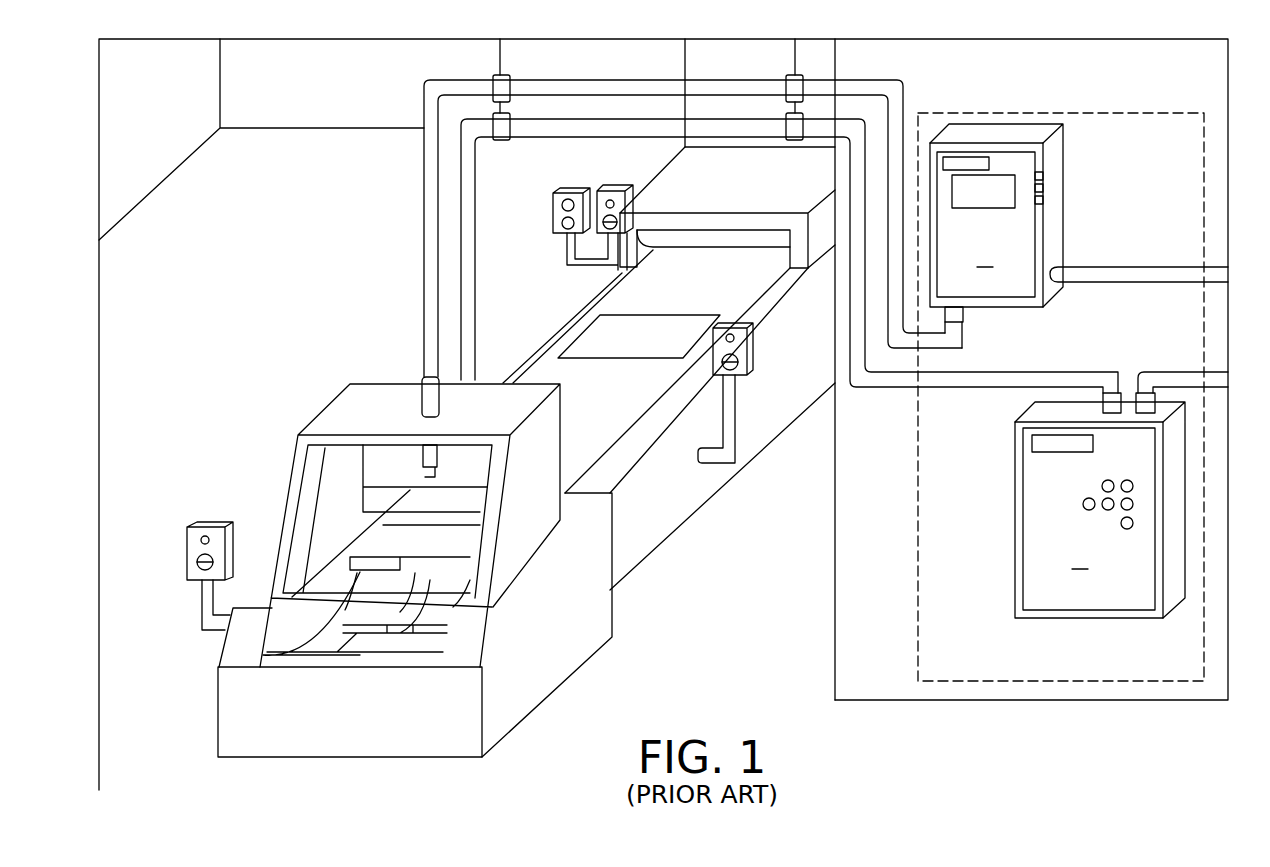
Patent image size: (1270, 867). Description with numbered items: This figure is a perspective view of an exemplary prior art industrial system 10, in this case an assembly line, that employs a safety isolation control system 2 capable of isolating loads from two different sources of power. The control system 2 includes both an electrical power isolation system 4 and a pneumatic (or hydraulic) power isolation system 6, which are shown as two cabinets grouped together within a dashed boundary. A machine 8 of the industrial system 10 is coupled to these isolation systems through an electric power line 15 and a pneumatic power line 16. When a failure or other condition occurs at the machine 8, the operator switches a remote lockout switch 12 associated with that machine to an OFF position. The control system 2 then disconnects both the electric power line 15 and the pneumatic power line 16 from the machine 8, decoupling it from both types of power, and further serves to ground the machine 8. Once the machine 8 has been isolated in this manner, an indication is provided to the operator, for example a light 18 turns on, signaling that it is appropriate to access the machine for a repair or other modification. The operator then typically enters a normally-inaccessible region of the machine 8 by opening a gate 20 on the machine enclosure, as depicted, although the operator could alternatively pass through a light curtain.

The control system 2 is at (1058, 681).
The electrical power isolation system 4 is at (1100, 510).
The pneumatic power isolation system 6 is at (996, 223).
The machine 8 is at (327, 405).
The industrial system 10 is at (398, 549).
The remote lockout switch 12 is at (202, 547).
The electric power line 15 is at (1185, 368).
The pneumatic power line 16 is at (1170, 267).
The light 18 is at (220, 537).
The gate 20 is at (288, 470).